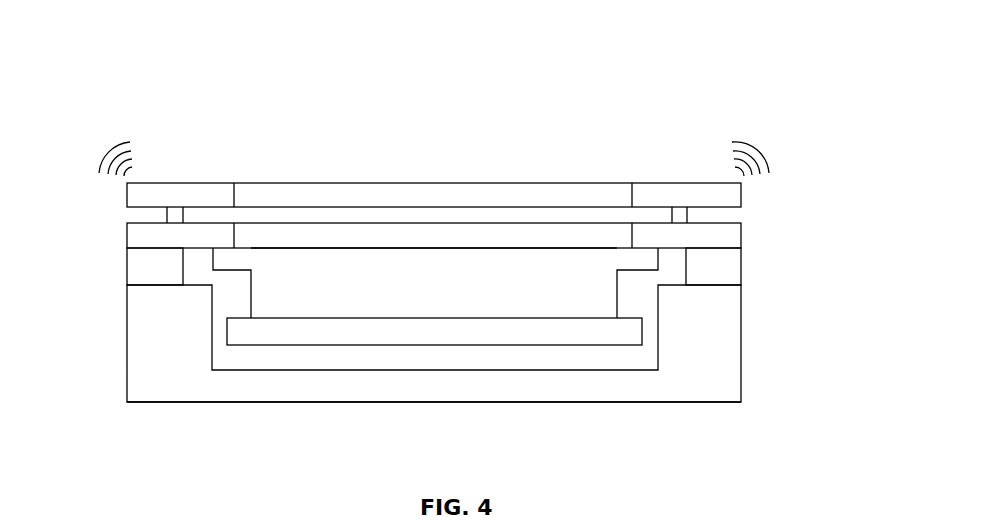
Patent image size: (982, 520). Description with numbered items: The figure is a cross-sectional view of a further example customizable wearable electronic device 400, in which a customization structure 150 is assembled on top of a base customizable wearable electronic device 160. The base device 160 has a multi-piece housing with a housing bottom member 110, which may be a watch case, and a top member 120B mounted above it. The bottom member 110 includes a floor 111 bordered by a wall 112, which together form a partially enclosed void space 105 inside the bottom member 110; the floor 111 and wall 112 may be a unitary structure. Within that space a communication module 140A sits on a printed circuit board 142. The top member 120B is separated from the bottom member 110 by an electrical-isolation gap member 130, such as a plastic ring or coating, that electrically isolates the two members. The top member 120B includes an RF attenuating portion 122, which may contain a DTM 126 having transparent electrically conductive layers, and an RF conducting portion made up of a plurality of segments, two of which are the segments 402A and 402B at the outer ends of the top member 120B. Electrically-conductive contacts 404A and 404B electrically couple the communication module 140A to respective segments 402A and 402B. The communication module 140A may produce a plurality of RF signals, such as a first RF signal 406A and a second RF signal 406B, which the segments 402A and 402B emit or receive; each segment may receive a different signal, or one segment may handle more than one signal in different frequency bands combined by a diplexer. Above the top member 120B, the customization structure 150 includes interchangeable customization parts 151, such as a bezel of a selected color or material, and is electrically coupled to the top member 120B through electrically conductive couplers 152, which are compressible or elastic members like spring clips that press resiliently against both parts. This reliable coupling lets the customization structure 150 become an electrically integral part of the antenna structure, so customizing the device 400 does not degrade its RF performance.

The customizable wearable electronic device 400 is at (763, 27).
The first RF signal 406A is at (745, 139).
The second RF signal 406B is at (112, 143).
The customization structure 150 is at (571, 156).
The interchangeable customization part 151 is at (647, 190).
The electrically conductive coupler 152 is at (683, 205).
The RF attenuating portion 122 is at (365, 235).
The DTM 126 is at (486, 235).
The segment 402A is at (742, 232).
The segment 402B is at (127, 233).
The base customizable wearable electronic device 160 is at (75, 222).
The electrical-isolation gap member 130 is at (434, 266).
The wall 112 is at (742, 338).
The housing bottom member 110 is at (350, 405).
The floor 111 is at (565, 403).
The void space 105 is at (435, 283).
The electrically-conductive contact 404A is at (617, 286).
The electrically-conductive contact 404B is at (251, 283).
The top member 120B is at (479, 257).
The communication module 140A is at (434, 331).
The printed circuit board 142 is at (434, 331).